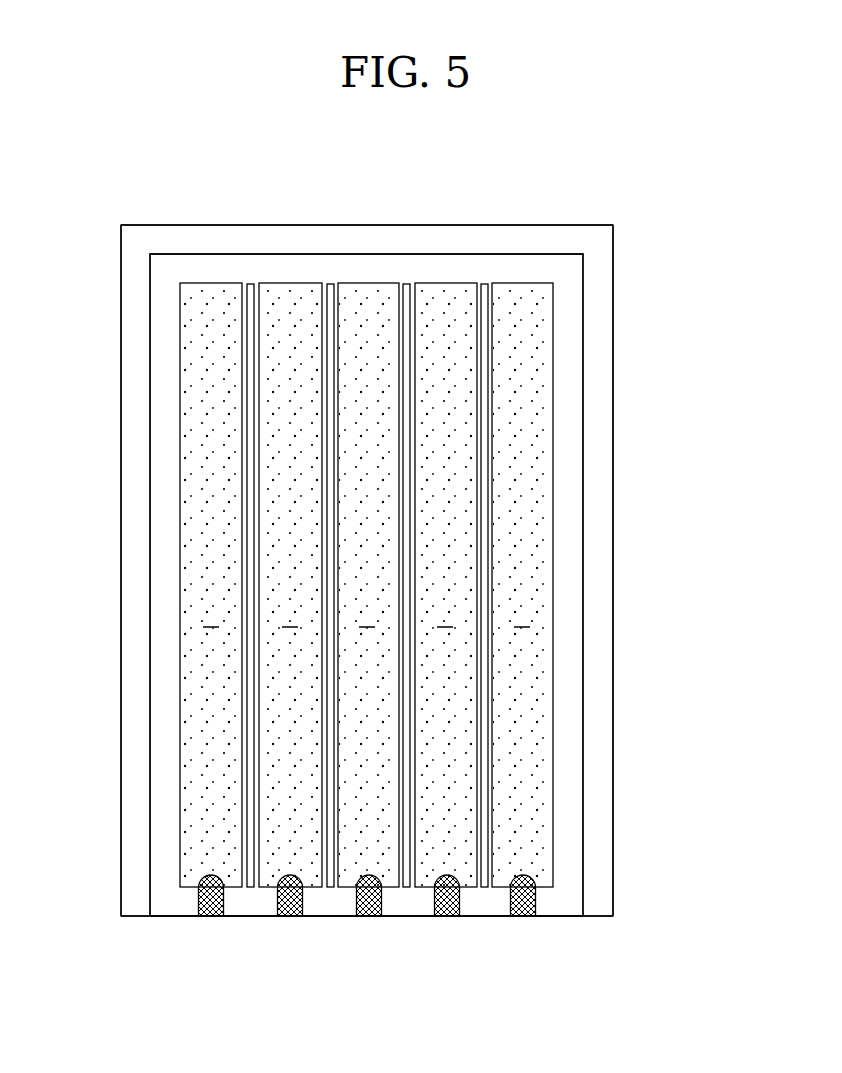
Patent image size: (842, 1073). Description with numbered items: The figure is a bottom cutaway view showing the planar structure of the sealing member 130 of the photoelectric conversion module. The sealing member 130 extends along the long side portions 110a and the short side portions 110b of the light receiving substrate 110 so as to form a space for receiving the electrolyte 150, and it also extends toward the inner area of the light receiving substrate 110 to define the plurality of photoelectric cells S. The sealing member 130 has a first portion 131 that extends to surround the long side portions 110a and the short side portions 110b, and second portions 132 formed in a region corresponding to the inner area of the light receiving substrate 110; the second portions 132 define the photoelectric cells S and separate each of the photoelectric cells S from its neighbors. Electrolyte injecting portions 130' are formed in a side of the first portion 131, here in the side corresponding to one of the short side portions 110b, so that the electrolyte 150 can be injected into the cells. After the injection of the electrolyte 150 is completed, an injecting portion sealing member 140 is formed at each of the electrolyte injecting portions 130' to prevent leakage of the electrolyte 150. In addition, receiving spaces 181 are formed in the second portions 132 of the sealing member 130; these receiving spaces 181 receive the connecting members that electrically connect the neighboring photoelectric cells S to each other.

The light receiving substrate 110 is at (613, 253).
The long side portions 110a is at (121, 408).
The short side portions 110b is at (349, 225).
The sealing member 130 is at (452, 585).
The first portion 131 is at (577, 352).
The second portions 132 is at (490, 316).
The electrolyte injecting portions 130' is at (423, 885).
The electrolyte 150 is at (535, 430).
The receiving spaces 181 is at (484, 561).
The injecting portion sealing member 140 is at (519, 916).
The photoelectric cells S is at (366, 616).